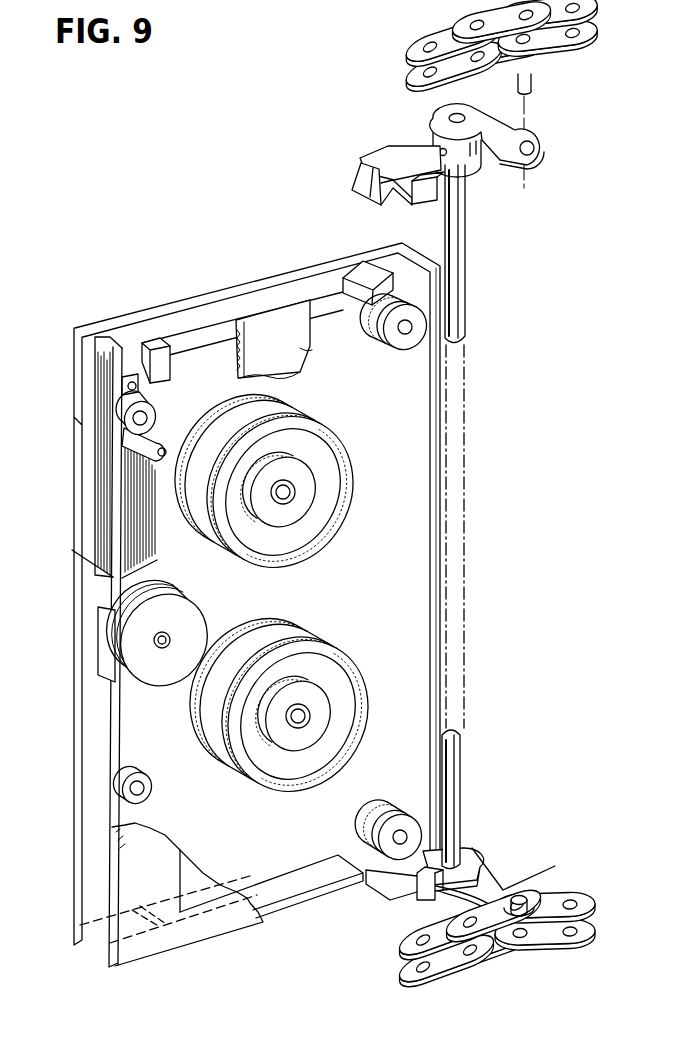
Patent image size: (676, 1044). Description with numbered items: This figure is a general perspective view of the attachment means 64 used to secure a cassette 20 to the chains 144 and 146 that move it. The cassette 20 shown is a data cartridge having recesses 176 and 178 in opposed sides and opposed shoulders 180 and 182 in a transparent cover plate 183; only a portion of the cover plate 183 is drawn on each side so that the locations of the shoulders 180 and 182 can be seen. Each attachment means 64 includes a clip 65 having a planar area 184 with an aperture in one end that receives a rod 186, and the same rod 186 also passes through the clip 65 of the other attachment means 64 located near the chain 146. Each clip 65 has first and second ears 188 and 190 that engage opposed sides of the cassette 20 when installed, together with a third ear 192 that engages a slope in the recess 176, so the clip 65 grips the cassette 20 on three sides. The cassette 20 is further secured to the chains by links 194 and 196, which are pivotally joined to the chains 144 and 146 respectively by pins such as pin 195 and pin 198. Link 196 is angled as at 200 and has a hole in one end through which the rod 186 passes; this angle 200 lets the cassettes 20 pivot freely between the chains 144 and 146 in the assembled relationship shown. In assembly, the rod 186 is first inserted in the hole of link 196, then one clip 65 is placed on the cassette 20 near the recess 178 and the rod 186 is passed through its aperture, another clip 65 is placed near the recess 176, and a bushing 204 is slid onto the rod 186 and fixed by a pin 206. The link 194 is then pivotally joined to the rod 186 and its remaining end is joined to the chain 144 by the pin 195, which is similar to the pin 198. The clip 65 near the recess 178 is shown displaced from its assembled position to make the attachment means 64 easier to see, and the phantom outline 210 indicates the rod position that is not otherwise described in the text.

The cassette 20 is at (96, 308).
The attachment means 64 is at (503, 229).
The clip 65 is at (390, 163).
The chain 144 is at (421, 30).
The chain 146 is at (406, 980).
The recess 176 is at (192, 338).
The recess 178 is at (97, 948).
The shoulder 180 is at (312, 350).
The shoulder 182 is at (198, 905).
The cover plate 183 is at (288, 325).
The planar area 184 is at (386, 183).
The rod 186 is at (466, 312).
The first ear 188 is at (412, 207).
The second ear 190 is at (383, 148).
The third ear 192 is at (366, 179).
The link 194 is at (496, 112).
The pin 195 is at (540, 83).
The link 196 is at (500, 888).
The pin 198 is at (527, 898).
The angle 200 is at (518, 880).
The bushing 204 is at (474, 156).
The pin 206 is at (433, 127).
The phantom rod position 210 is at (440, 433).